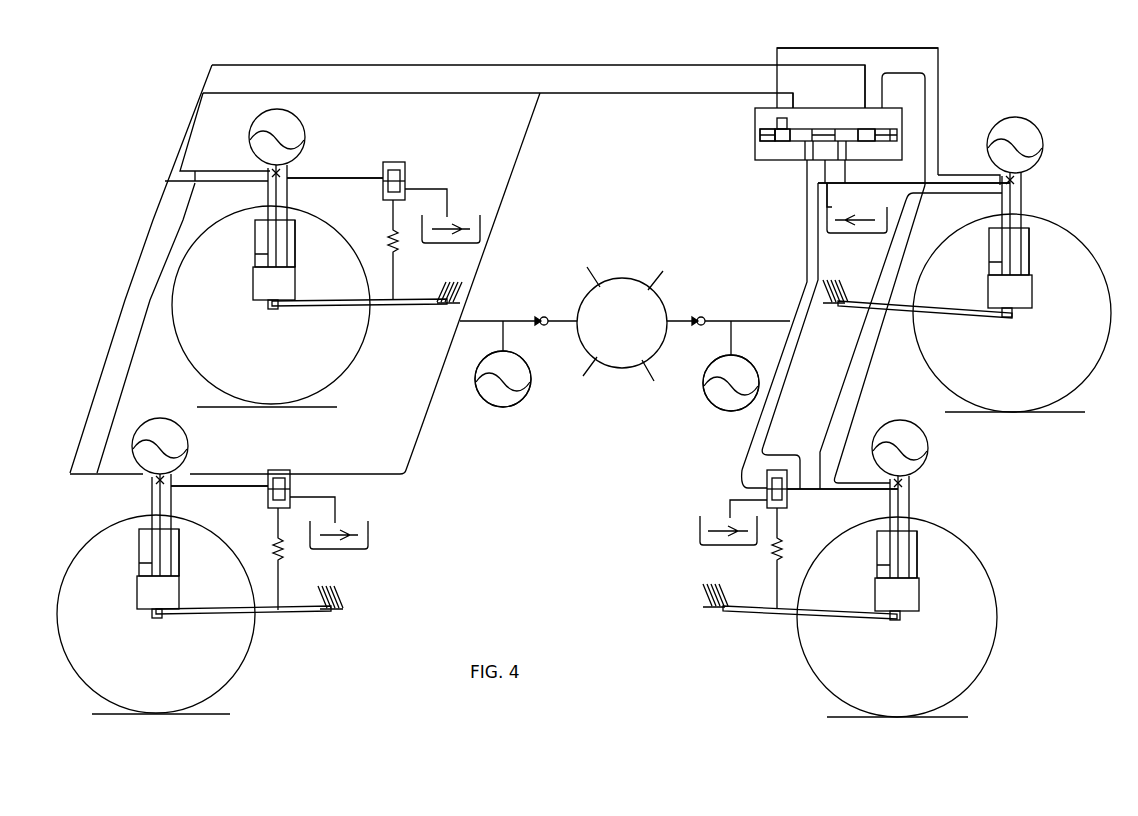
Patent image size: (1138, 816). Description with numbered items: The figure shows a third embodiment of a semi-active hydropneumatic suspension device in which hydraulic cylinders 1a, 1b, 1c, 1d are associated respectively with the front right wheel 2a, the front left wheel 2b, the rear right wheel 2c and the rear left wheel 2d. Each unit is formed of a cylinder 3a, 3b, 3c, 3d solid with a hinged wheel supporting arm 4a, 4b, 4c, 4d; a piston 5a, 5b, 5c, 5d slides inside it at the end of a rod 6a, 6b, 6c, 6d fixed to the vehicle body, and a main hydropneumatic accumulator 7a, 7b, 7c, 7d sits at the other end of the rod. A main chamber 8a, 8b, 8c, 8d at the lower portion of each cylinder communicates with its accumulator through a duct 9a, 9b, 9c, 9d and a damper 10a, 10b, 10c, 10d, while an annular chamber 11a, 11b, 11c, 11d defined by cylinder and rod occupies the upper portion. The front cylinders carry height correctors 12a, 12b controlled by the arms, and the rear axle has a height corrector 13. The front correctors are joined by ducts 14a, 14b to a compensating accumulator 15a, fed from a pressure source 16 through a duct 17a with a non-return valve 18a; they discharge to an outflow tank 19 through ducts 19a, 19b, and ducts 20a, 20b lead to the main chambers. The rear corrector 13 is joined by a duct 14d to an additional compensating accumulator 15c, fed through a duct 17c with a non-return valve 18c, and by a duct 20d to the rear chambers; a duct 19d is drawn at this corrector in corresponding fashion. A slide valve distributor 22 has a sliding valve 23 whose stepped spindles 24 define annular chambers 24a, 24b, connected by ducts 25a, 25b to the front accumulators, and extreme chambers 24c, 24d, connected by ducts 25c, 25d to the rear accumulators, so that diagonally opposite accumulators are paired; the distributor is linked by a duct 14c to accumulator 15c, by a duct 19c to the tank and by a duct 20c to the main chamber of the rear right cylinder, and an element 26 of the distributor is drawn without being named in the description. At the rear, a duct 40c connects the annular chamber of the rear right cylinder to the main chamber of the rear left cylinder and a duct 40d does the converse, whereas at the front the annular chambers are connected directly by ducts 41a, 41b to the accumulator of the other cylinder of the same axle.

The hydraulic cylinder 1a is at (323, 251).
The hydraulic cylinder 1b is at (202, 541).
The hydraulic cylinder 1c is at (971, 248).
The hydraulic cylinder 1d is at (863, 544).
The front right wheel 2a is at (343, 362).
The front left wheel 2b is at (245, 645).
The rear right wheel 2c is at (1075, 375).
The rear left wheel 2d is at (982, 642).
The cylinder 3a is at (297, 256).
The cylinder 3b is at (180, 570).
The cylinder 3c is at (1033, 287).
The cylinder 3d is at (920, 587).
The hinged wheel supporting arm 4a is at (410, 308).
The hinged wheel supporting arm 4b is at (312, 617).
The hinged wheel supporting arm 4c is at (975, 322).
The hinged wheel supporting arm 4d is at (758, 620).
The piston 5a is at (255, 290).
The piston 5b is at (138, 598).
The piston 5c is at (1030, 270).
The piston 5d is at (920, 572).
The rod 6a is at (283, 200).
The rod 6b is at (172, 508).
The rod 6c is at (1018, 205).
The rod 6d is at (905, 508).
The main hydropneumatic accumulator 7a is at (258, 117).
The main hydropneumatic accumulator 7b is at (172, 416).
The main hydropneumatic accumulator 7c is at (1028, 112).
The main hydropneumatic accumulator 7d is at (912, 418).
The main chamber 8a is at (255, 302).
The main chamber 8b is at (138, 600).
The main chamber 8c is at (990, 300).
The main chamber 8d is at (875, 597).
The duct 9a is at (265, 203).
The duct 9b is at (150, 508).
The duct 9c is at (1002, 212).
The duct 9d is at (880, 512).
The damper 10a is at (279, 172).
The damper 10b is at (163, 480).
The damper 10c is at (1015, 178).
The damper 10d is at (917, 482).
The annular chamber 11a is at (293, 238).
The annular chamber 11b is at (178, 545).
The annular chamber 11c is at (1028, 252).
The annular chamber 11d is at (915, 548).
The height corrector 12a is at (416, 160).
The height corrector 12b is at (302, 466).
The height corrector 13 is at (755, 488).
The duct 14a is at (490, 236).
The duct 14b is at (420, 472).
The duct 14c is at (808, 268).
The duct 14d is at (755, 417).
The hydropneumatic compensating accumulator 15a is at (512, 412).
The additional hydropneumatic compensating accumulator 15c is at (716, 410).
The source of fluid under pressure 16 is at (623, 293).
The duct 17a is at (542, 313).
The duct 17c is at (702, 313).
The non-return valve 18a is at (546, 328).
The non-return valve 18c is at (697, 330).
The outflow tank 19 is at (425, 244).
The duct 19a is at (447, 197).
The duct 19b is at (330, 510).
The duct 19c is at (847, 207).
The reservoir line 19d is at (705, 517).
The duct 20a is at (365, 170).
The duct 20b is at (240, 484).
The duct 20c is at (960, 175).
The duct 20d is at (807, 497).
The slide valve distributor 22 is at (890, 46).
The sliding valve 23 is at (850, 130).
The shouldered or stepped spindle 24 is at (799, 141).
The annular chamber 24a is at (852, 143).
The annular chamber 24b is at (790, 162).
The extreme chamber 24c is at (762, 162).
The extreme chamber 24d is at (890, 107).
The duct 25a is at (640, 66).
The duct 25b is at (590, 98).
The duct 25c is at (940, 72).
The duct 25d is at (938, 108).
The valve element 26 is at (825, 127).
The duct 40c is at (857, 360).
The duct 40d is at (785, 375).
The duct 41a is at (115, 333).
The duct 41b is at (127, 378).